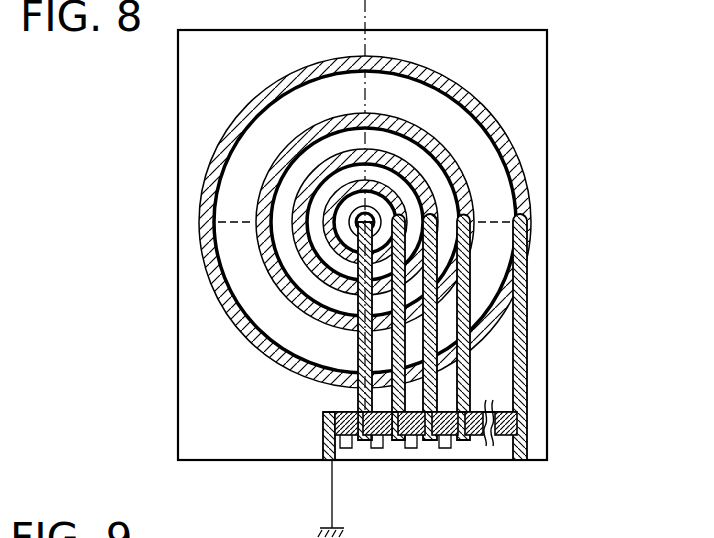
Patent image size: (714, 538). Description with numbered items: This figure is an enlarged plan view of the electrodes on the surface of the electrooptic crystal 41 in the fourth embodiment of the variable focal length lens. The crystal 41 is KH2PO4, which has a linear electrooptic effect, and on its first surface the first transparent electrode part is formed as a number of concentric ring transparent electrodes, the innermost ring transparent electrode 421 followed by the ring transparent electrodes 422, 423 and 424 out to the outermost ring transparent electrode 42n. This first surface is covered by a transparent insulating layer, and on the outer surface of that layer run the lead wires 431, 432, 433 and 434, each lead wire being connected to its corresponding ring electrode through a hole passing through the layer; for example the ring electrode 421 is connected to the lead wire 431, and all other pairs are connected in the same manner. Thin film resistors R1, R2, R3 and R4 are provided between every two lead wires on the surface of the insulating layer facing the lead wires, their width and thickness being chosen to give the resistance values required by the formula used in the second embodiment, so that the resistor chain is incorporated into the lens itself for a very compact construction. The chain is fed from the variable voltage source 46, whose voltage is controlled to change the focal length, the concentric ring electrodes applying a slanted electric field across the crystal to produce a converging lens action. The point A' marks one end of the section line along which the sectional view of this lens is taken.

The electrooptic crystal 41 is at (548, 76).
The ring transparent electrode 42n is at (215, 150).
The ring transparent electrode 424 is at (262, 200).
The ring transparent electrode 423 is at (296, 233).
The ring transparent electrode 422 is at (330, 270).
The ring transparent electrode 421 is at (345, 306).
The lead wire 431 is at (365, 450).
The lead wire 432 is at (398, 450).
The lead wire 433 is at (430, 450).
The lead wire 434 is at (463, 450).
The variable voltage source 46 is at (520, 460).
The thin film resistor R1 is at (346, 448).
The thin film resistor R2 is at (377, 448).
The thin film resistor R3 is at (411, 448).
The thin film resistor R4 is at (445, 448).
The section line end point A' is at (343, 499).